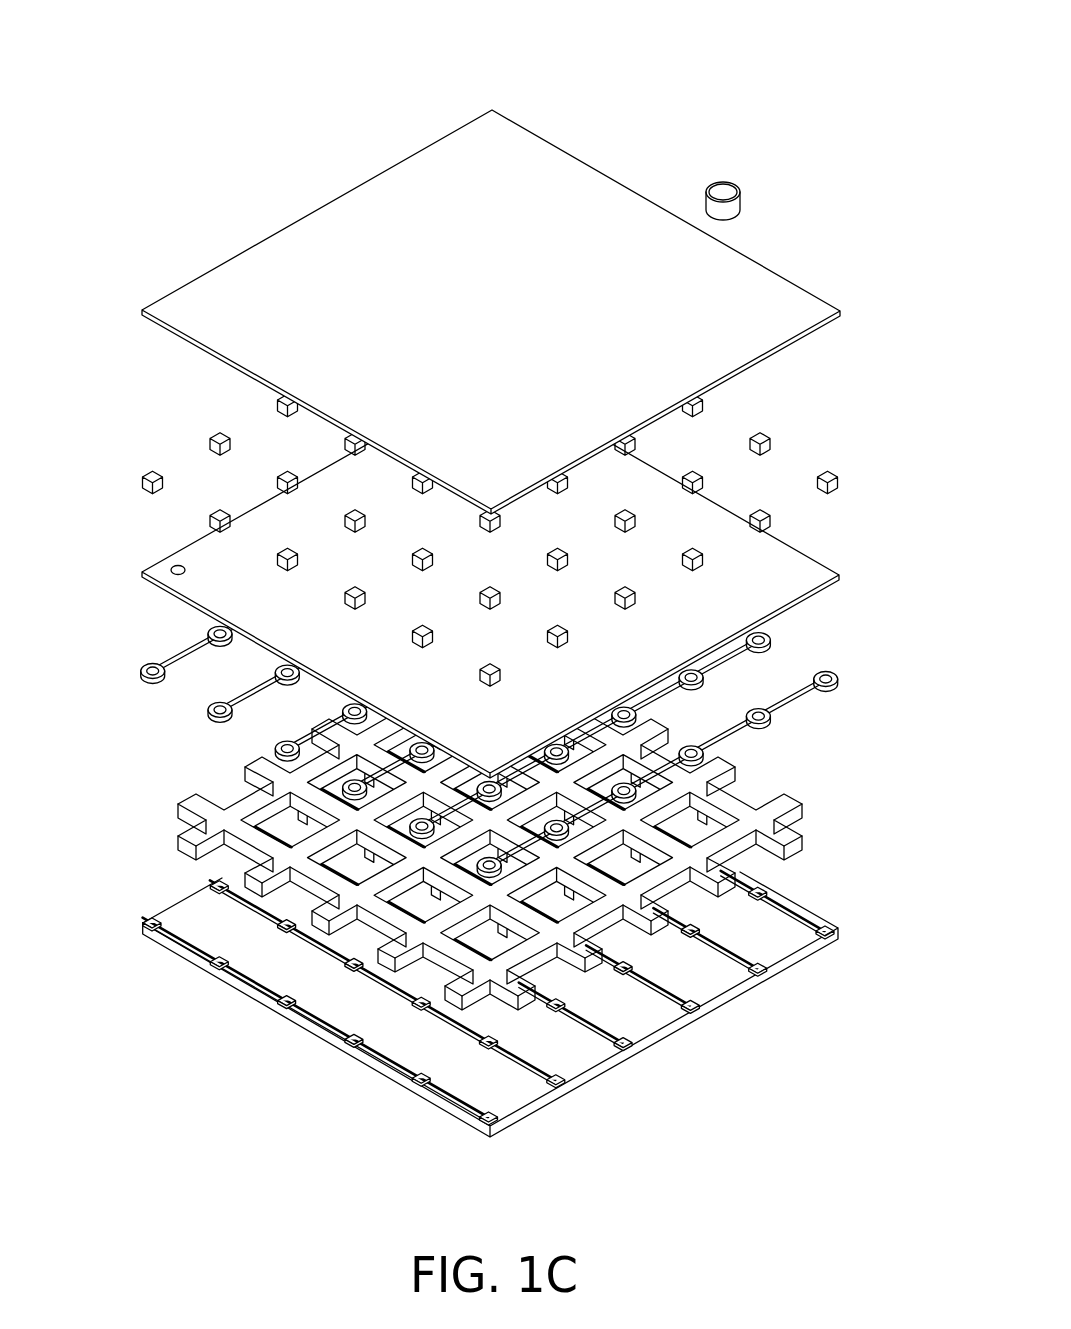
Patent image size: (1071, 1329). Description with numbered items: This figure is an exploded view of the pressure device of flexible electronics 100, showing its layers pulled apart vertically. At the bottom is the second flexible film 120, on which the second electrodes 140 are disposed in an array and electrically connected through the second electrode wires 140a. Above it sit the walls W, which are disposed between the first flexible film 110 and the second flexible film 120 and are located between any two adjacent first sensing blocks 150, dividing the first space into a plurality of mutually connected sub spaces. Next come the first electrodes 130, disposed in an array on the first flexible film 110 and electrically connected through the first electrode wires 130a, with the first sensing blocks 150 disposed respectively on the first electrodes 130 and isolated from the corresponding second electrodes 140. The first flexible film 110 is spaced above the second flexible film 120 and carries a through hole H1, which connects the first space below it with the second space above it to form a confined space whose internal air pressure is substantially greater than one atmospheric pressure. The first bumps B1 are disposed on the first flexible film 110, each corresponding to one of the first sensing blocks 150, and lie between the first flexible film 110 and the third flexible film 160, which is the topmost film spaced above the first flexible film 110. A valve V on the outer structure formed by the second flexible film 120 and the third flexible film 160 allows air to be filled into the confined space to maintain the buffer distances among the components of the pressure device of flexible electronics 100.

The pressure device of flexible electronics 100 is at (744, 72).
The valve V is at (727, 208).
The third flexible film 160 is at (770, 307).
The first bumps B1 is at (771, 446).
The through hole H1 is at (176, 564).
The first flexible film 110 is at (760, 580).
The first electrodes 130 is at (770, 722).
The first sensing blocks 150 is at (763, 737).
The first electrode wires 130a is at (210, 693).
The walls W is at (795, 797).
The second flexible film 120 is at (795, 917).
The second electrodes 140 is at (770, 965).
The second electrode wires 140a is at (666, 990).